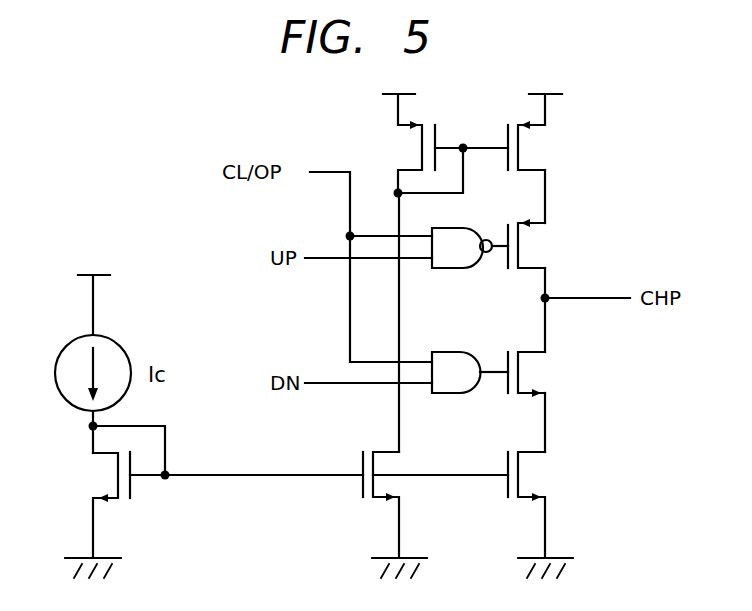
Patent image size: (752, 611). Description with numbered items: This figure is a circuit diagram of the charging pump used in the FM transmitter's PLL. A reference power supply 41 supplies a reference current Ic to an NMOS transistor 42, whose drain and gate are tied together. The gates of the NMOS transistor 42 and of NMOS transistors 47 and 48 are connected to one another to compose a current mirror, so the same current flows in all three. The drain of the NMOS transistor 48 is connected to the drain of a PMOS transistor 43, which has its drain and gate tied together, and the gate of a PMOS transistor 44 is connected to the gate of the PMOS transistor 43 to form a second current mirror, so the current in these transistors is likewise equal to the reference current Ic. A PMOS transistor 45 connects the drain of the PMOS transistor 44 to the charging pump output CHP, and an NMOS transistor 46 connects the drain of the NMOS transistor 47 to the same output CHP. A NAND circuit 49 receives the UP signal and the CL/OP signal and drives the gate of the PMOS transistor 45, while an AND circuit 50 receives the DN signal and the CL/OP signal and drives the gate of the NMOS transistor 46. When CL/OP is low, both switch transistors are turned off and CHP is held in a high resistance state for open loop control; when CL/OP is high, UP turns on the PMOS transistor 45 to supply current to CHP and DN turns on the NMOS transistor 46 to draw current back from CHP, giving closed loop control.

The reference power supply 41 is at (62, 348).
The NMOS transistor 42 is at (118, 480).
The PMOS transistor 43 is at (422, 147).
The PMOS transistor 44 is at (518, 152).
The PMOS transistor 45 is at (518, 250).
The NMOS transistor 46 is at (518, 375).
The NMOS transistor 47 is at (518, 478).
The NMOS transistor 48 is at (373, 497).
The NAND circuit 49 is at (445, 270).
The AND circuit 50 is at (445, 395).